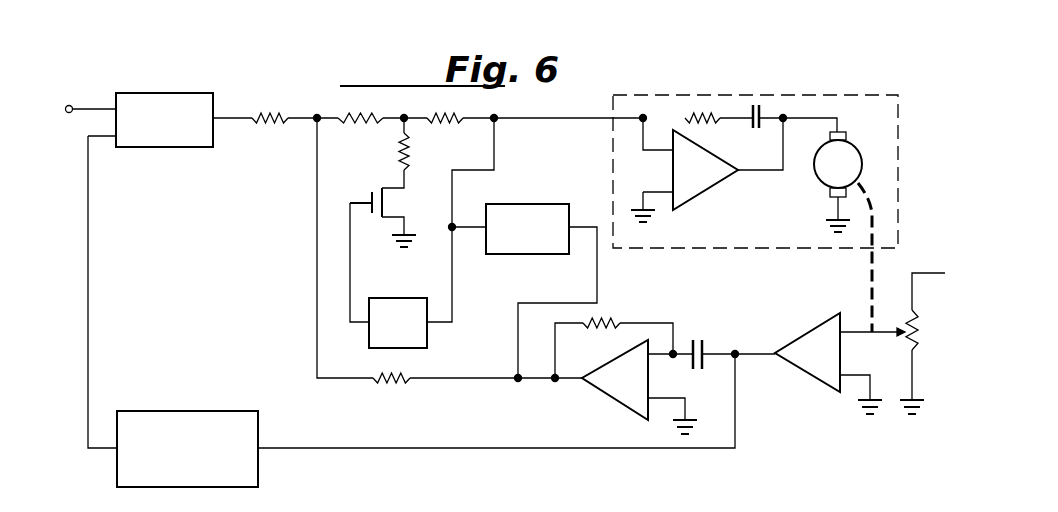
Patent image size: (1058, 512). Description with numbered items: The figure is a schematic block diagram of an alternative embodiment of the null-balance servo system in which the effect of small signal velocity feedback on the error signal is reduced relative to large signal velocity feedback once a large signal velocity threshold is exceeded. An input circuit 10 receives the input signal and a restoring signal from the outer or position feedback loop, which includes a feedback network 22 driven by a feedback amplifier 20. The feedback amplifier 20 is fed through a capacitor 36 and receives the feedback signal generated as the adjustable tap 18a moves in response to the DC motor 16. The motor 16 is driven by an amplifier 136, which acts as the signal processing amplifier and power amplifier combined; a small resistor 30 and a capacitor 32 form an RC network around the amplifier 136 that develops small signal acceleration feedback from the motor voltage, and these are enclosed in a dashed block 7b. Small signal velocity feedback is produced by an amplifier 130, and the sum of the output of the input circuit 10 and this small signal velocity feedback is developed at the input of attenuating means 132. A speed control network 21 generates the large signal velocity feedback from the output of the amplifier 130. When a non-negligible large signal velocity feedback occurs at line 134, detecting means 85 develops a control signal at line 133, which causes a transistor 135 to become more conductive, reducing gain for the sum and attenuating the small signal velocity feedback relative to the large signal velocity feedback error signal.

The input circuit 10 is at (195, 103).
The attenuating means 132 is at (405, 107).
The transistor 135 is at (368, 195).
The line 134 is at (494, 158).
The line 133 is at (353, 255).
The speed control network 21 is at (512, 248).
The detecting means 85 is at (418, 333).
The feedback network 22 is at (212, 417).
The amplifier 130 is at (622, 395).
The capacitor 36 is at (703, 343).
The feedback amplifier 20 is at (812, 363).
The adjustable tap 18a is at (918, 337).
The drive circuit 7b is at (733, 95).
The small resistor 30 is at (710, 120).
The capacitor 32 is at (762, 127).
The amplifier 136 is at (713, 188).
The DC motor 16 is at (847, 157).